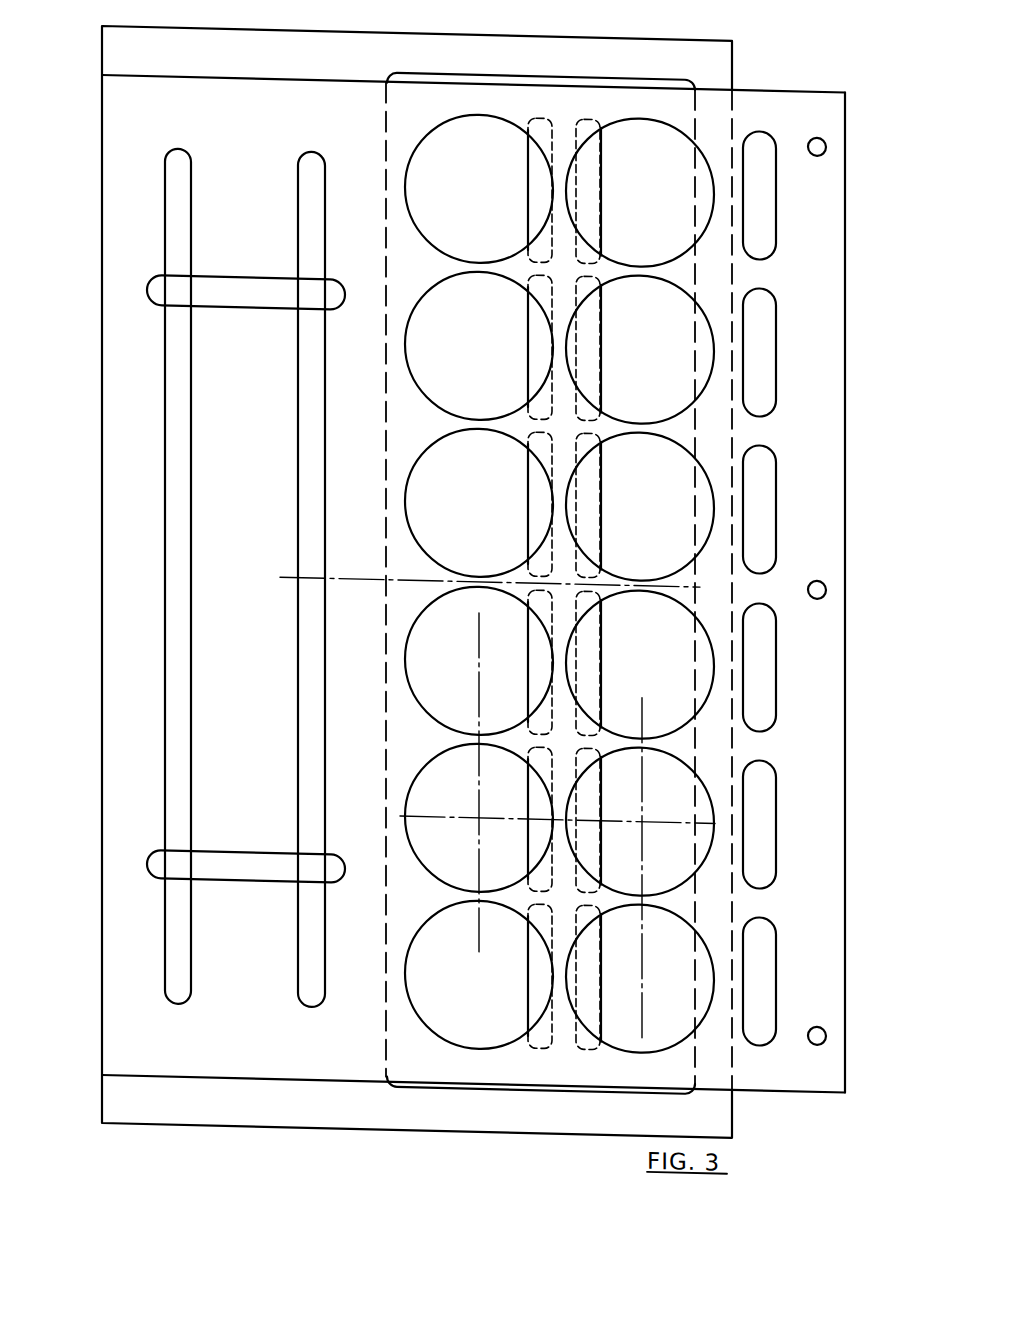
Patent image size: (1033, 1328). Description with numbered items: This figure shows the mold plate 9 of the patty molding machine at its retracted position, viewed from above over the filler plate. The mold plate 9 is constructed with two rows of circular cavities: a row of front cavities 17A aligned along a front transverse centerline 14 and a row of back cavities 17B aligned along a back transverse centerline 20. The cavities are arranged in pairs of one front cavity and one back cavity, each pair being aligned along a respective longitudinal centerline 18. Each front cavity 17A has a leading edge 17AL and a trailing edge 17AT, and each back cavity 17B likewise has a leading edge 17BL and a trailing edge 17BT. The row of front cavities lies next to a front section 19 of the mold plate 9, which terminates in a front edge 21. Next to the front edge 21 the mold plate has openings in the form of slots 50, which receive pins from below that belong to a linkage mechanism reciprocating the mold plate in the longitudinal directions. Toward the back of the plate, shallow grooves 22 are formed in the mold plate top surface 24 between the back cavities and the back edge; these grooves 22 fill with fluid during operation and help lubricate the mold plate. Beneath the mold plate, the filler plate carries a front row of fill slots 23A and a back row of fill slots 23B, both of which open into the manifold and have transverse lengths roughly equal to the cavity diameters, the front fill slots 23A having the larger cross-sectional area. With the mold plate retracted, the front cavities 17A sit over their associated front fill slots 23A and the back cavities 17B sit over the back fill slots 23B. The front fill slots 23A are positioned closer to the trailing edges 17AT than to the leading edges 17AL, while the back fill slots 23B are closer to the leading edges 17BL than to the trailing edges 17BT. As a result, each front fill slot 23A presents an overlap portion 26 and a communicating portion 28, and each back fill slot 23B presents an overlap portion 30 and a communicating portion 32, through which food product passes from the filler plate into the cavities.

The mold plate 9 is at (96, 720).
The front transverse centerline 14 is at (643, 702).
The front cavities 17A is at (682, 1023).
The trailing edge of front cavity 17AT is at (566, 185).
The leading edge of front cavity 17AL is at (716, 348).
The back cavities 17B is at (405, 200).
The trailing edge of back cavity 17BT is at (405, 344).
The leading edge of back cavity 17BL is at (553, 344).
The longitudinal centerlines 18 is at (438, 807).
The front section of mold plate 19 is at (802, 106).
The back transverse centerline 20 is at (478, 625).
The front edge 21 is at (847, 380).
The shallow grooves 22 is at (325, 708).
The front fill slots 23A is at (566, 348).
The back fill slots 23B is at (552, 963).
The mold plate top surface 24 is at (252, 972).
The overlap portion of front fill slot 26 is at (581, 439).
The communicating portion of front fill slot 28 is at (590, 511).
The overlap portion of back fill slot 30 is at (537, 438).
The communicating portion of back fill slot 32 is at (535, 498).
The slots 50 is at (745, 146).